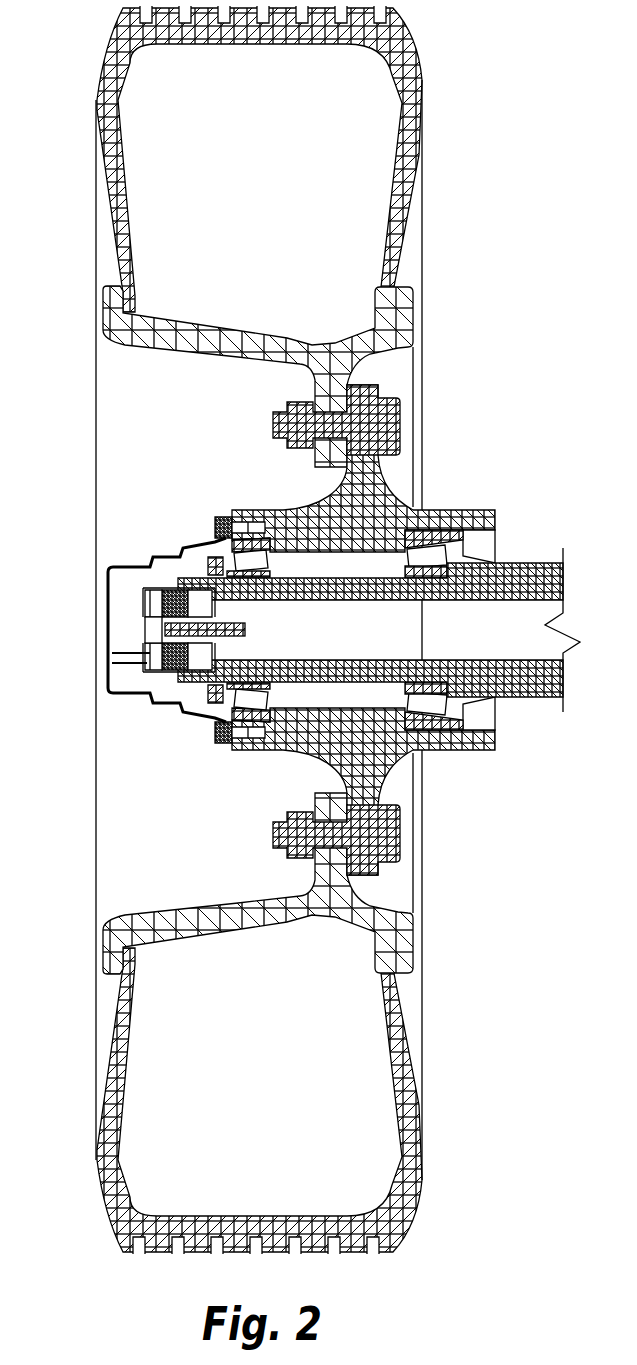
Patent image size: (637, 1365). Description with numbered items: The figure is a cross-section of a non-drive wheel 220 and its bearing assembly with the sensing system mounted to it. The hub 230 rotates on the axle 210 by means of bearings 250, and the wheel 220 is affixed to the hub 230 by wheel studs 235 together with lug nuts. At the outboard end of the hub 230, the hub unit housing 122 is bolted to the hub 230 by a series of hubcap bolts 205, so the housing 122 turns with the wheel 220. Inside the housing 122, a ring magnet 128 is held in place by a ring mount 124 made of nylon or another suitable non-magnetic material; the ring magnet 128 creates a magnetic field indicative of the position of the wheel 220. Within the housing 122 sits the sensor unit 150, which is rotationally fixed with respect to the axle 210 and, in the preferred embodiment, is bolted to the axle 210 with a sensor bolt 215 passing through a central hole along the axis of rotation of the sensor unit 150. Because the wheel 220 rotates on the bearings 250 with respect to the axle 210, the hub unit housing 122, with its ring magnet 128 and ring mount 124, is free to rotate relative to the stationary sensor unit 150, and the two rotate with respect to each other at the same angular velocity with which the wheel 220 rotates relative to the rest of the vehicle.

The hub unit housing 122 is at (106, 564).
The ring mount 124 is at (172, 688).
The ring magnet 128 is at (162, 676).
The sensor unit 150 is at (140, 638).
The hubcap bolts 205 is at (206, 515).
The axle 210 is at (480, 583).
The sensor bolt 215 is at (157, 660).
The non-drive wheel 220 is at (403, 327).
The hub 230 is at (385, 510).
The wheel studs 235 is at (402, 422).
The bearings 250 is at (280, 397).